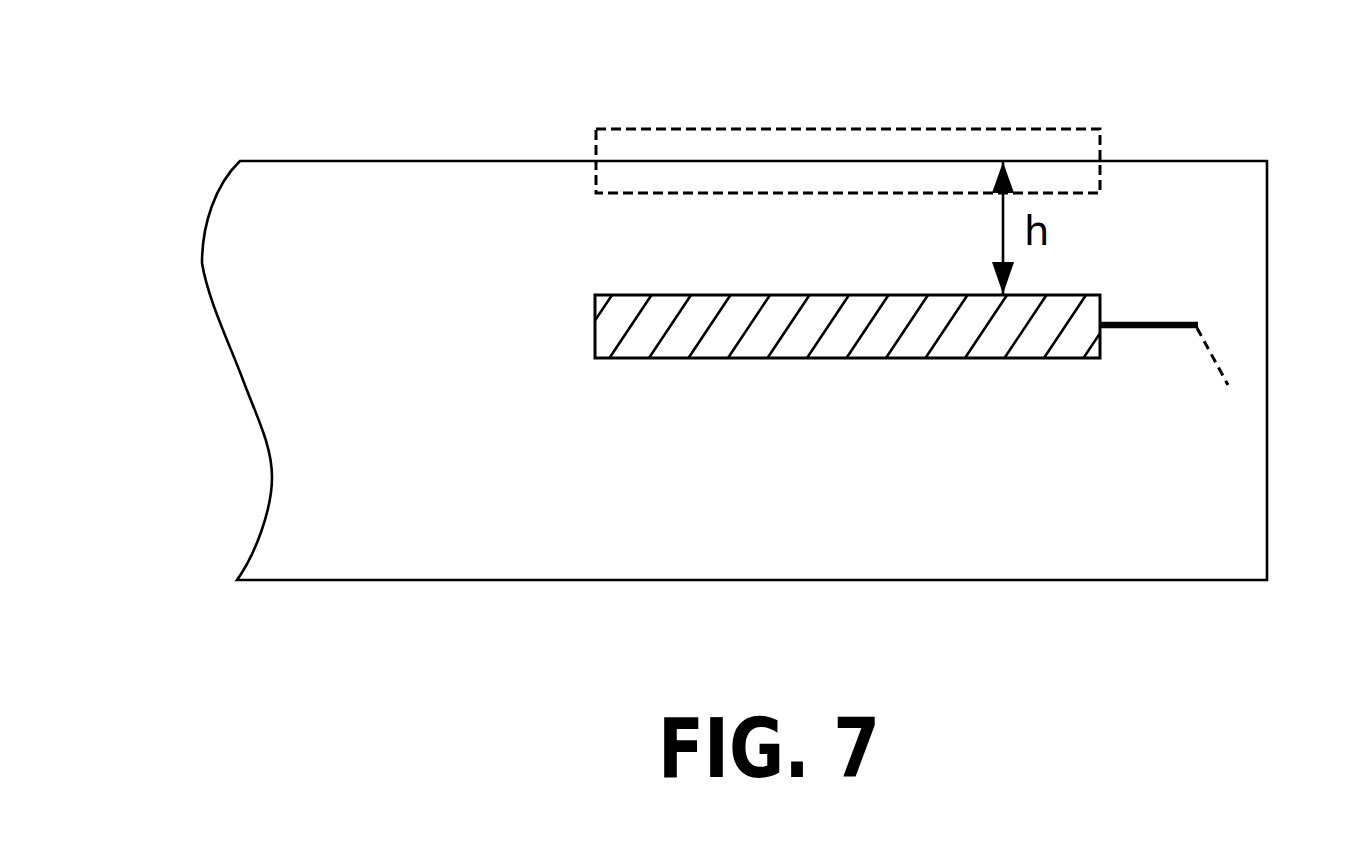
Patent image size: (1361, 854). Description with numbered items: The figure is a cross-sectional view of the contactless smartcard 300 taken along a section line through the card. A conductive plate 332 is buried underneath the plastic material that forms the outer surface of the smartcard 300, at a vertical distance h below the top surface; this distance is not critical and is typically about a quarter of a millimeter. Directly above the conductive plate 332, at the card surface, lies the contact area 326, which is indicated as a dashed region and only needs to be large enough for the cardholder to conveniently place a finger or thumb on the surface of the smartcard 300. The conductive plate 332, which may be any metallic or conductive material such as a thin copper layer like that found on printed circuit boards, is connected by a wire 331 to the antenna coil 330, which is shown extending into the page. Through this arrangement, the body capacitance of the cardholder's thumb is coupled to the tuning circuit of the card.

The contactless smartcard 300 is at (1160, 161).
The contact area 326 is at (740, 129).
The antenna coil 330 is at (1213, 388).
The wire 331 is at (1145, 330).
The conductive plate 332 is at (752, 360).